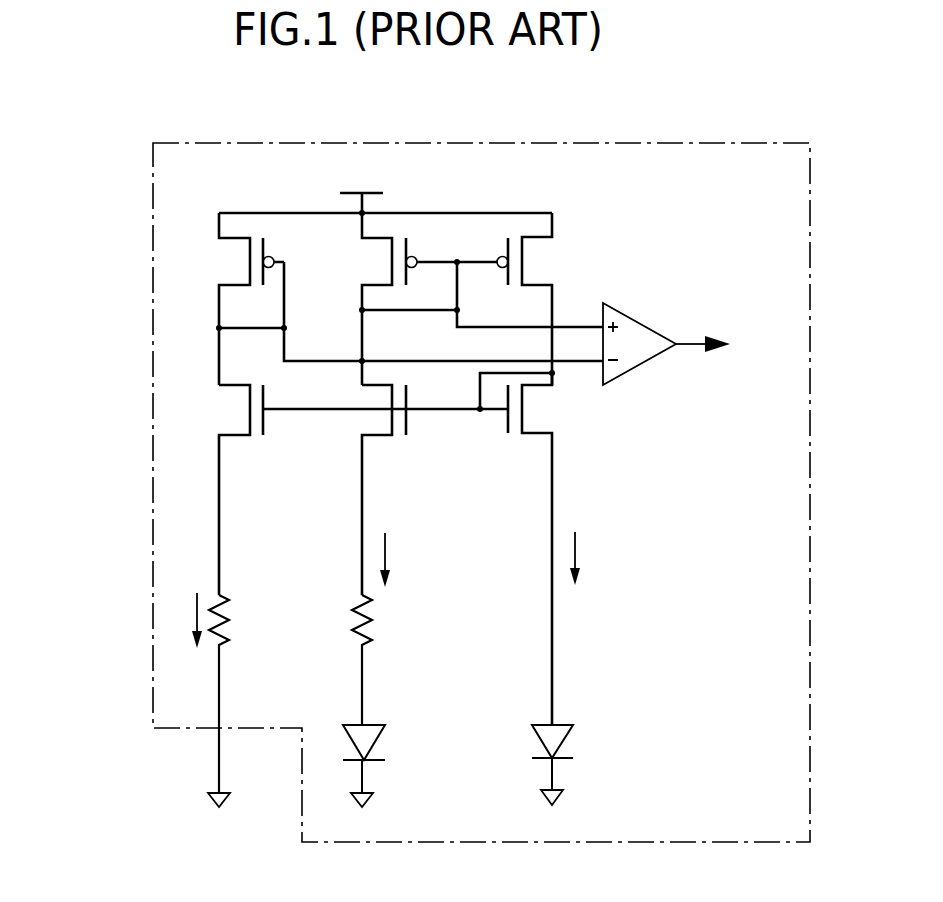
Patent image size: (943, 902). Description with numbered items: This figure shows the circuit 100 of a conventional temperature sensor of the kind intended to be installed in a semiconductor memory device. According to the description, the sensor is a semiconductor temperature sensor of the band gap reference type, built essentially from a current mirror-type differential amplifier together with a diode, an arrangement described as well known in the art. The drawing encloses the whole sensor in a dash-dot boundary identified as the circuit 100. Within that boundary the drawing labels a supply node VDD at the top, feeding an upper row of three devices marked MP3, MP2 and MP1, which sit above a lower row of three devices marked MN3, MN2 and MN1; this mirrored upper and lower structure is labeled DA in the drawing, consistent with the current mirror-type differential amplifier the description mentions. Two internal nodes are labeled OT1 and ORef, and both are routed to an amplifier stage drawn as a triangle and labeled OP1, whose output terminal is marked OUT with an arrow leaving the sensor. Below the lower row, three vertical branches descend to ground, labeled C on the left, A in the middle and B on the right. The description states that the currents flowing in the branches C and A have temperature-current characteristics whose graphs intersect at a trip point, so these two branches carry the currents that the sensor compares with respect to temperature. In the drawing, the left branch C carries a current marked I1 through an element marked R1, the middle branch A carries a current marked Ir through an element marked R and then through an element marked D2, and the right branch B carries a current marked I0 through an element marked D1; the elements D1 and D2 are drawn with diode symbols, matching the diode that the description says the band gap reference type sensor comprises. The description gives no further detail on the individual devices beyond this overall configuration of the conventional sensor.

The circuit 100 is at (153, 315).
The supply voltage VDD is at (385, 188).
The first PMOS transistor MP1 is at (513, 299).
The second PMOS transistor MP2 is at (399, 299).
The third PMOS transistor MP3 is at (242, 299).
The first NMOS transistor MN1 is at (525, 547).
The second NMOS transistor MN2 is at (364, 487).
The third NMOS transistor MN3 is at (354, 490).
The operational amplifier OP1 is at (647, 323).
The output terminal OUT is at (728, 344).
The first output node OT1 is at (409, 313).
The reference output node ORef is at (528, 293).
The differential amplifier DA is at (422, 349).
The branch A is at (362, 473).
The node B is at (552, 470).
The branch C is at (219, 465).
The reference current Ir is at (399, 560).
The output current I0 is at (592, 558).
The first current I1 is at (184, 620).
The first resistor R1 is at (236, 701).
The resistor R is at (375, 660).
The first diode (LED) D1 is at (562, 722).
The second diode (LED) D2 is at (373, 725).